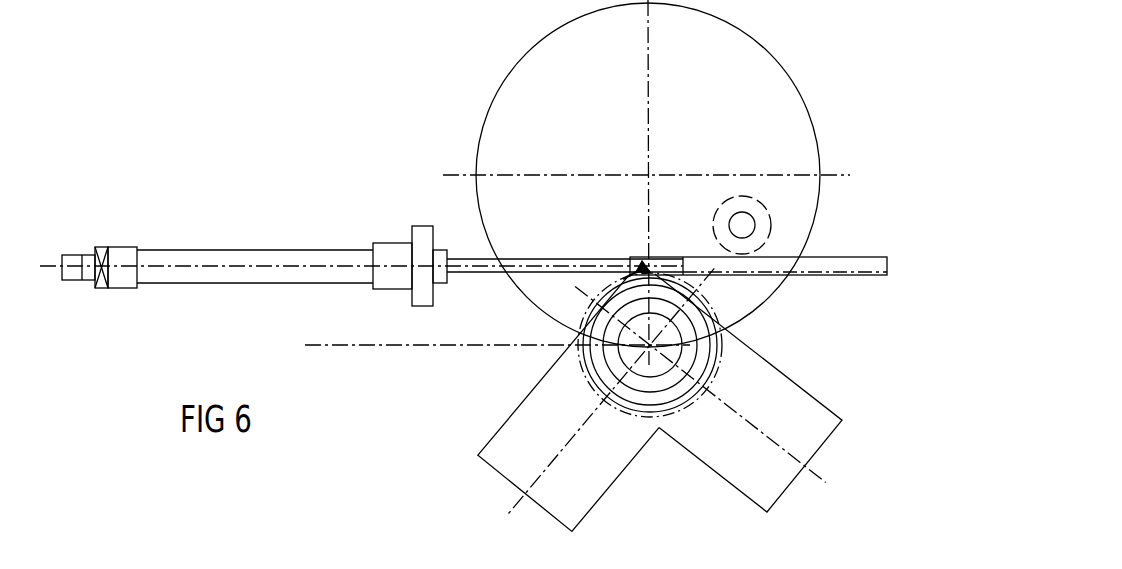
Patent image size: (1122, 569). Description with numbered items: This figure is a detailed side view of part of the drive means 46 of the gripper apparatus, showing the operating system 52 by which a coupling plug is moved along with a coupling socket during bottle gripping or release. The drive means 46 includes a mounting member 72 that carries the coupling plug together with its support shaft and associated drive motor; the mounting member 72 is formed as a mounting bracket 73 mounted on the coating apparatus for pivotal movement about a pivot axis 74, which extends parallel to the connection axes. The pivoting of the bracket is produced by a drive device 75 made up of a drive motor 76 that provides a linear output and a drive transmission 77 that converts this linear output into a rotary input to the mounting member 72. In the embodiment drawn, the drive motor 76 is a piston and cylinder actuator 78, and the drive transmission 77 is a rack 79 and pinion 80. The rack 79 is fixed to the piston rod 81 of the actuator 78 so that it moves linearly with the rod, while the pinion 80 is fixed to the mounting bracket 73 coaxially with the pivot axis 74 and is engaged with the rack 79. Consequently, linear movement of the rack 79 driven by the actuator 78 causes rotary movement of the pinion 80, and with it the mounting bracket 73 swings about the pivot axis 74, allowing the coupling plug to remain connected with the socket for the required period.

The drive means 46 is at (350, 86).
The operating system 52 is at (365, 170).
The mounting member 72 is at (472, 409).
The mounting bracket 73 is at (488, 438).
The pivot axis 74 is at (700, 352).
The drive device 75 is at (318, 207).
The drive motor 76 is at (228, 247).
The drive transmission 77 is at (814, 238).
The piston and cylinder actuator 78 is at (278, 283).
The rack 79 is at (843, 262).
The pinion 80 is at (700, 317).
The piston rod 81 is at (492, 272).